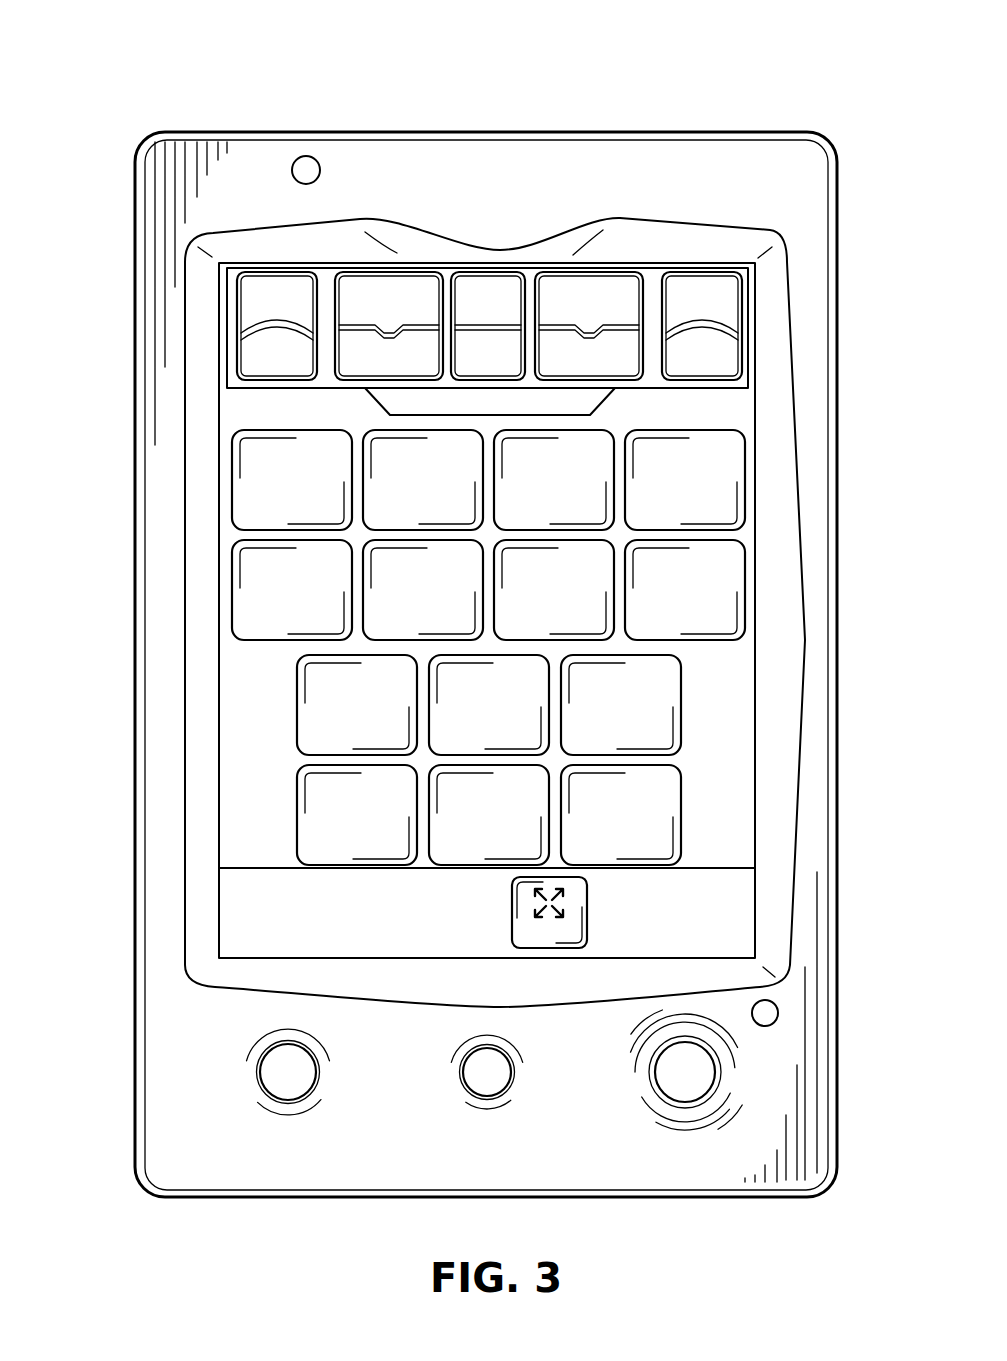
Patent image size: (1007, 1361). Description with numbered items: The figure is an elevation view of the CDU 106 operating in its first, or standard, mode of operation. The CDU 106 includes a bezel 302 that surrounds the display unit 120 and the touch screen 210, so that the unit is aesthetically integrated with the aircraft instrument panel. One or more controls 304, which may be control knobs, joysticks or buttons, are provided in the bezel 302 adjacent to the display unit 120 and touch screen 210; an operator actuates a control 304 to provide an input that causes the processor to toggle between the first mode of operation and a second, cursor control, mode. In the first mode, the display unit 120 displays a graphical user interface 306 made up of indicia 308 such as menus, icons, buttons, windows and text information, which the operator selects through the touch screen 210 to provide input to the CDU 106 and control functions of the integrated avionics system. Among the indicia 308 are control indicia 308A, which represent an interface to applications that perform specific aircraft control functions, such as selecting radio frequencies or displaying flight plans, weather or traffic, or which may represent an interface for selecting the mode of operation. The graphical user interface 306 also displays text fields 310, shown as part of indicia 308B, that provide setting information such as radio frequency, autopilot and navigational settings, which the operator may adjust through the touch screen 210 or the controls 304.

The CDU 106 is at (838, 109).
The bezel 302 is at (817, 222).
The display unit 120 is at (243, 848).
The touch screen 210 is at (241, 804).
The graphical user interface 306 is at (263, 297).
The indicia 308 is at (477, 511).
The control indicia 308A is at (260, 587).
The indicia 308B is at (405, 297).
The text fields 310 is at (585, 297).
The controls 304 is at (297, 1072).